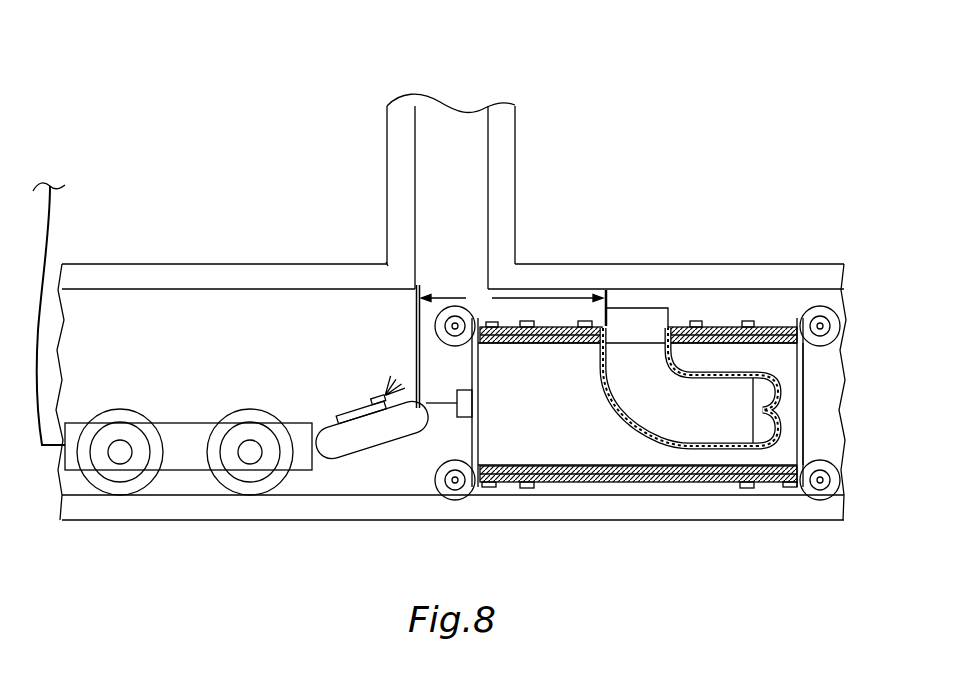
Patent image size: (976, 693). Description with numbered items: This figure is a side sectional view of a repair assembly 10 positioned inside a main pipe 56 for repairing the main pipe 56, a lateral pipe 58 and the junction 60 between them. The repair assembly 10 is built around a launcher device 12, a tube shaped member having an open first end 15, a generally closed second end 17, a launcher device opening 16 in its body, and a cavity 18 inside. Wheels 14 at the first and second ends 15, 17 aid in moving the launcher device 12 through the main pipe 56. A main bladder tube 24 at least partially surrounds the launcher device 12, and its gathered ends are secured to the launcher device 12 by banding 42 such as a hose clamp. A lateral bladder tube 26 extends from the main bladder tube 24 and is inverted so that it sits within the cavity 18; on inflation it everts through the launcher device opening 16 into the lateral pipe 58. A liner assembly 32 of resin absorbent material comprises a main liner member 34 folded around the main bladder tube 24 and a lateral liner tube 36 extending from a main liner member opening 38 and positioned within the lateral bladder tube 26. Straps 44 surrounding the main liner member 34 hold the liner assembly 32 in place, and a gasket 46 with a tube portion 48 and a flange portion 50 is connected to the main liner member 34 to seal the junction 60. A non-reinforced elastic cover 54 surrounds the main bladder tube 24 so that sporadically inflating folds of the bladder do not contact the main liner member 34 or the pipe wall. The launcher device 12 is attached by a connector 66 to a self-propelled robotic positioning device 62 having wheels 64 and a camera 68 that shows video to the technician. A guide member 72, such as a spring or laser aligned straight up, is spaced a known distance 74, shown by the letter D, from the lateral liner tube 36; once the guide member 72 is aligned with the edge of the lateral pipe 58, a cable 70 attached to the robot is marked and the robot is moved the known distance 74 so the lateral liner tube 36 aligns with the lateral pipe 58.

The repair assembly 10 is at (372, 352).
The launcher device 12 is at (637, 396).
The wheels 14 is at (841, 320).
The first end 15 is at (470, 440).
The launcher device opening 16 is at (686, 360).
The second end 17 is at (805, 372).
The cavity 18 is at (538, 408).
The main bladder tube 24 is at (542, 343).
The lateral bladder tube 26 is at (640, 420).
The liner assembly 32 is at (655, 416).
The main liner member 34 is at (773, 326).
The lateral liner tube 36 is at (680, 442).
The main liner member opening 38 is at (612, 329).
The banding 42 is at (488, 488).
The straps 44 is at (527, 489).
The gasket 46 is at (655, 322).
The tube portion 48 is at (604, 312).
The flange portion 50 is at (700, 325).
The elastic cover 54 is at (785, 328).
The main pipe 56 is at (186, 276).
The lateral pipe 58 is at (516, 184).
The junction 60 is at (387, 268).
The robotic positioning device 62 is at (168, 422).
The wheels 64 is at (246, 423).
The connector 66 is at (340, 445).
The camera 68 is at (376, 394).
The cable 70 is at (54, 212).
The guide member 72 is at (414, 313).
The known distance 74 is at (476, 292).